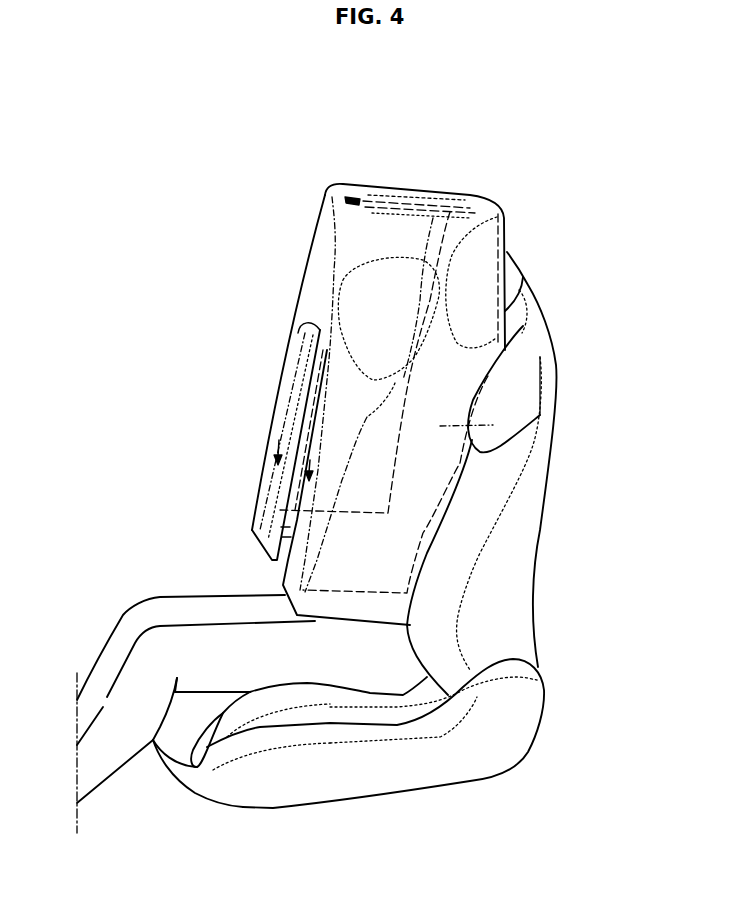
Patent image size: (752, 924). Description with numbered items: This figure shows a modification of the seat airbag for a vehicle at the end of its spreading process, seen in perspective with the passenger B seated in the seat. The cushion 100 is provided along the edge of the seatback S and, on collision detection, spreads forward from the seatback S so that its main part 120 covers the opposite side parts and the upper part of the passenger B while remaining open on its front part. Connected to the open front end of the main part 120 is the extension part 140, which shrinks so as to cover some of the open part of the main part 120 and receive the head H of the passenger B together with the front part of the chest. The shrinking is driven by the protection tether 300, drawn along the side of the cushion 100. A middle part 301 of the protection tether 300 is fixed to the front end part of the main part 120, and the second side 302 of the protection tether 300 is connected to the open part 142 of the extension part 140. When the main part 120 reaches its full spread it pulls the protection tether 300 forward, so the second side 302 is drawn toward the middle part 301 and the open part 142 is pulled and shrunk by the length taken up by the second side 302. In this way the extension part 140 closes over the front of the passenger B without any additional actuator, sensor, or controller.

The cushion 100 is at (519, 216).
The main part 120 is at (430, 192).
The extension part 140 is at (310, 300).
The open part 142 is at (302, 427).
The protection tether 300 is at (275, 483).
The middle part 301 is at (350, 196).
The second side 302 is at (310, 331).
The head H is at (367, 290).
The passenger B is at (503, 422).
The seatback S is at (515, 531).